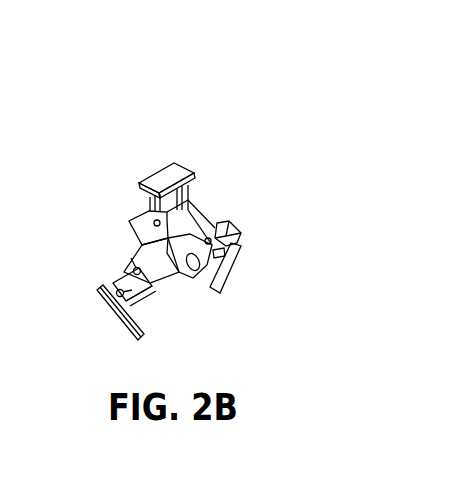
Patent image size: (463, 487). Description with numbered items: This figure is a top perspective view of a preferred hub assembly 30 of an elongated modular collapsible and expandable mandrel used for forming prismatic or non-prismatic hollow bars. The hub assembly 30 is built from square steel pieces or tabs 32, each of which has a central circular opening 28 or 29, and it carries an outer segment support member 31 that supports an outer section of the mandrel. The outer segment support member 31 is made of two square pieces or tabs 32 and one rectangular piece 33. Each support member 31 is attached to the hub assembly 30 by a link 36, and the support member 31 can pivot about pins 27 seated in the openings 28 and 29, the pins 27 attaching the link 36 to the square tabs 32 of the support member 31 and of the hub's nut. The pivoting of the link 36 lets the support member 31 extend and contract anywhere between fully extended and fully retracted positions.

The hub assembly 30 is at (234, 124).
The rectangular piece 33 is at (165, 172).
The link 36 is at (187, 210).
The central circular opening 28 is at (132, 265).
The pin 27 is at (125, 268).
The square piece or tab 32 is at (133, 272).
The central circular opening 29 is at (143, 305).
The outer segment support member 31 is at (229, 260).